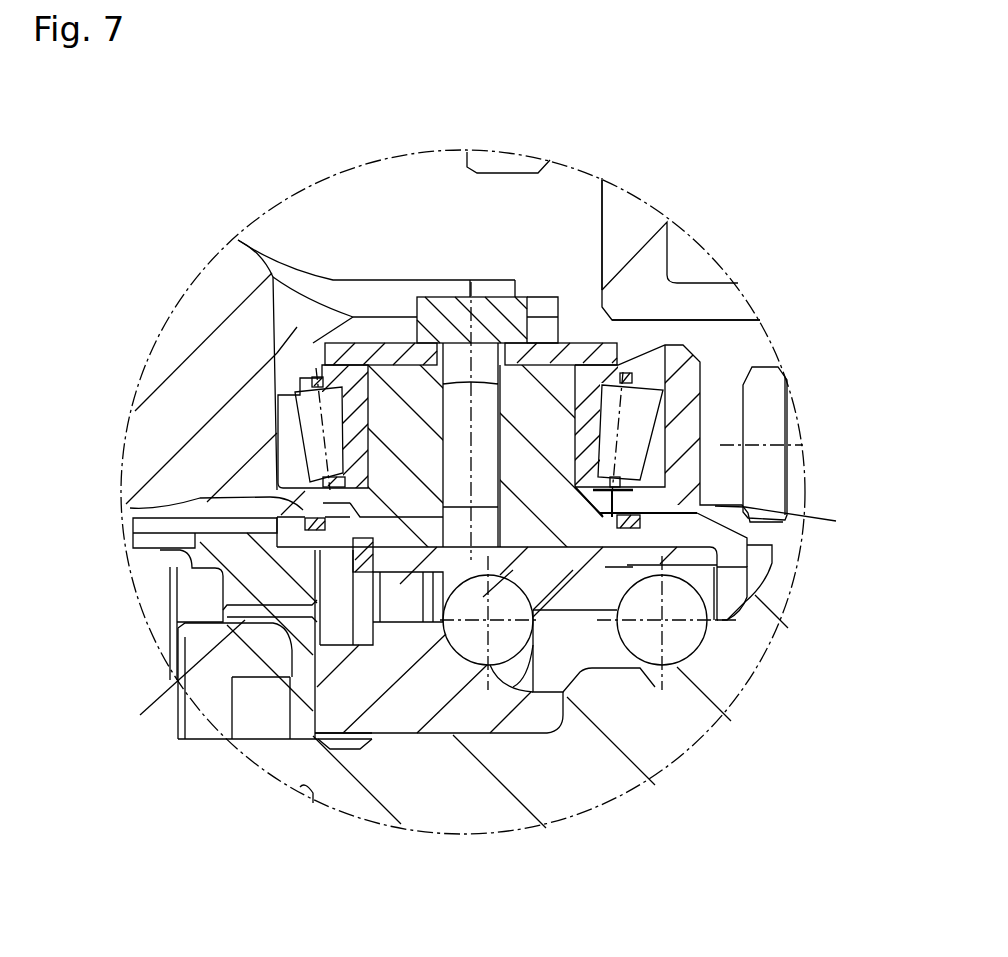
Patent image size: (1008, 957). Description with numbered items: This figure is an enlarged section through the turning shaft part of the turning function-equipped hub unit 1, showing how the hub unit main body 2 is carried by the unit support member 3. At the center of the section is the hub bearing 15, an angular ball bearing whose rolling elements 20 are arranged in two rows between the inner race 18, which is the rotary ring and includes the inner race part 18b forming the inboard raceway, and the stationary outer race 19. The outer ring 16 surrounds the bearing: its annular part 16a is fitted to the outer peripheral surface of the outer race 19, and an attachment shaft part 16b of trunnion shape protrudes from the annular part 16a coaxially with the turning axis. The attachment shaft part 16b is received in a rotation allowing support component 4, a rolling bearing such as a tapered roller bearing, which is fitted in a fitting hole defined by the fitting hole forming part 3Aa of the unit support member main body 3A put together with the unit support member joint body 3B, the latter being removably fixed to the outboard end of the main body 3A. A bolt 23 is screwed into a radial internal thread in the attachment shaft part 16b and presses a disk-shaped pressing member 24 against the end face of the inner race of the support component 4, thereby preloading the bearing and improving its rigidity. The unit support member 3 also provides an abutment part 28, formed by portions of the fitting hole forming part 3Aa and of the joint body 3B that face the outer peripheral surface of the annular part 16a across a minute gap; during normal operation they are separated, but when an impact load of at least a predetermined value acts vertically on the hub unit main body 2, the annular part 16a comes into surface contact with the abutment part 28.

The turning function-equipped hub unit 1 is at (729, 161).
The hub unit main body 2 is at (686, 787).
The unit support member 3 is at (228, 392).
The unit support member main body 3A is at (147, 418).
The fitting hole forming part 3Aa is at (130, 508).
The unit support member joint body 3B is at (687, 488).
The rotation allowing support component 4 is at (308, 407).
The hub bearing 15 is at (840, 602).
The outer ring 16 is at (813, 202).
The annular part 16a is at (645, 358).
The attachment shaft part 16b is at (600, 330).
The inner race 18 is at (727, 683).
The inner race part 18b is at (417, 715).
The outer race 19 is at (605, 567).
The rolling elements 20 is at (687, 634).
The bolt 23 is at (485, 313).
The pressing member 24 is at (553, 418).
The abutment part 28 is at (277, 531).